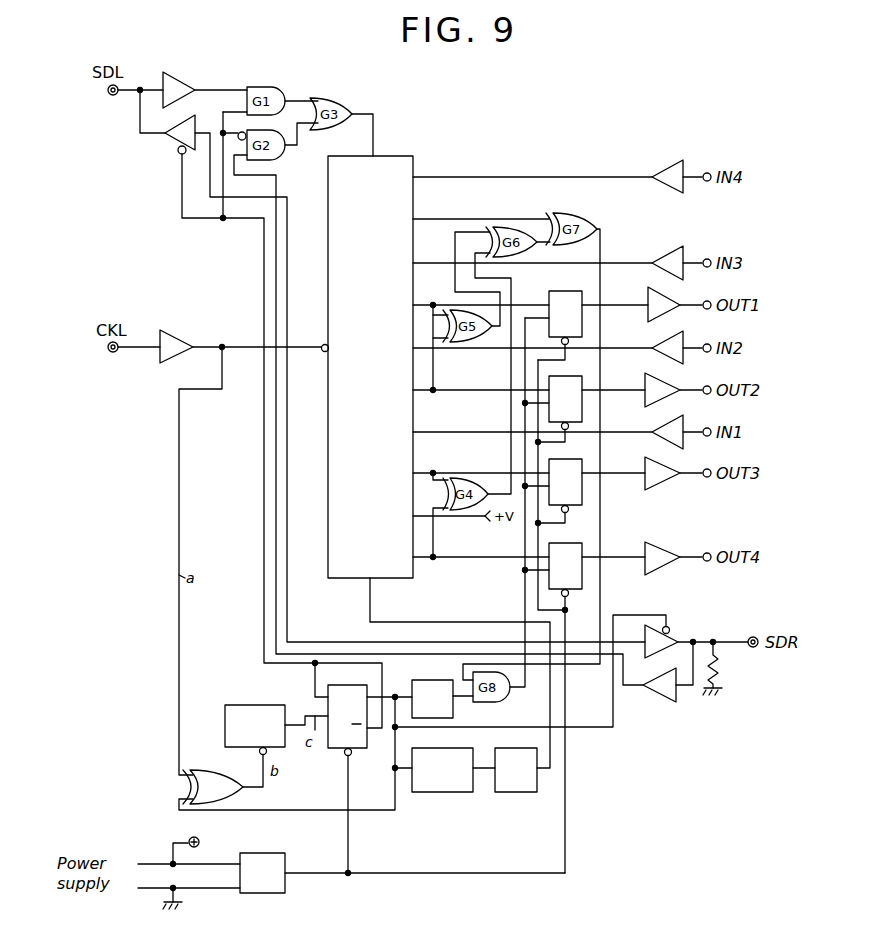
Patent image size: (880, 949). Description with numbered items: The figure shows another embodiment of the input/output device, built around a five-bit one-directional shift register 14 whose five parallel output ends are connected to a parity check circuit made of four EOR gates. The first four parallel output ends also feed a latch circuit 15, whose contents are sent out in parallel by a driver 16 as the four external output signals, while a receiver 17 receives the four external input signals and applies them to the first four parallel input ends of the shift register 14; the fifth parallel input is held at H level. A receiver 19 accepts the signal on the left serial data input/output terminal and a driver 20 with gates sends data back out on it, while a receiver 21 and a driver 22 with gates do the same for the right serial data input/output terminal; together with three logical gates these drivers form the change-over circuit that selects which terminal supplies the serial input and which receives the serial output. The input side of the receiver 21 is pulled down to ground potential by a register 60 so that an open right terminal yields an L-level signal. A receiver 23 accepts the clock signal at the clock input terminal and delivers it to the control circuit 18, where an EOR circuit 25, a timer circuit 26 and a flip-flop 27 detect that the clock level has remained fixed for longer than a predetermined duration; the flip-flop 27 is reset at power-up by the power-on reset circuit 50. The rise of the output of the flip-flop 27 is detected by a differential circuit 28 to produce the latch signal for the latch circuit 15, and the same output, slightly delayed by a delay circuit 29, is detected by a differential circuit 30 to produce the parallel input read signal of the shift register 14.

The shift register 14 is at (398, 156).
The latch circuit 15 is at (567, 291).
The driver 16 is at (677, 296).
The receiver 17 is at (667, 163).
The control circuit 18 is at (398, 846).
The receiver 19 is at (185, 86).
The driver with gates 20 is at (172, 137).
The receiver 21 is at (670, 693).
The driver with gates 22 is at (672, 634).
The receiver 23 is at (173, 338).
The EOR circuit 25 is at (213, 773).
The timer circuit 26 is at (235, 705).
The flip-flop 27 is at (335, 750).
The differential circuit 28 is at (453, 708).
The delay circuit 29 is at (455, 792).
The differential circuit 30 is at (520, 792).
The power-on reset circuit 50 is at (285, 883).
The register 60 is at (727, 661).